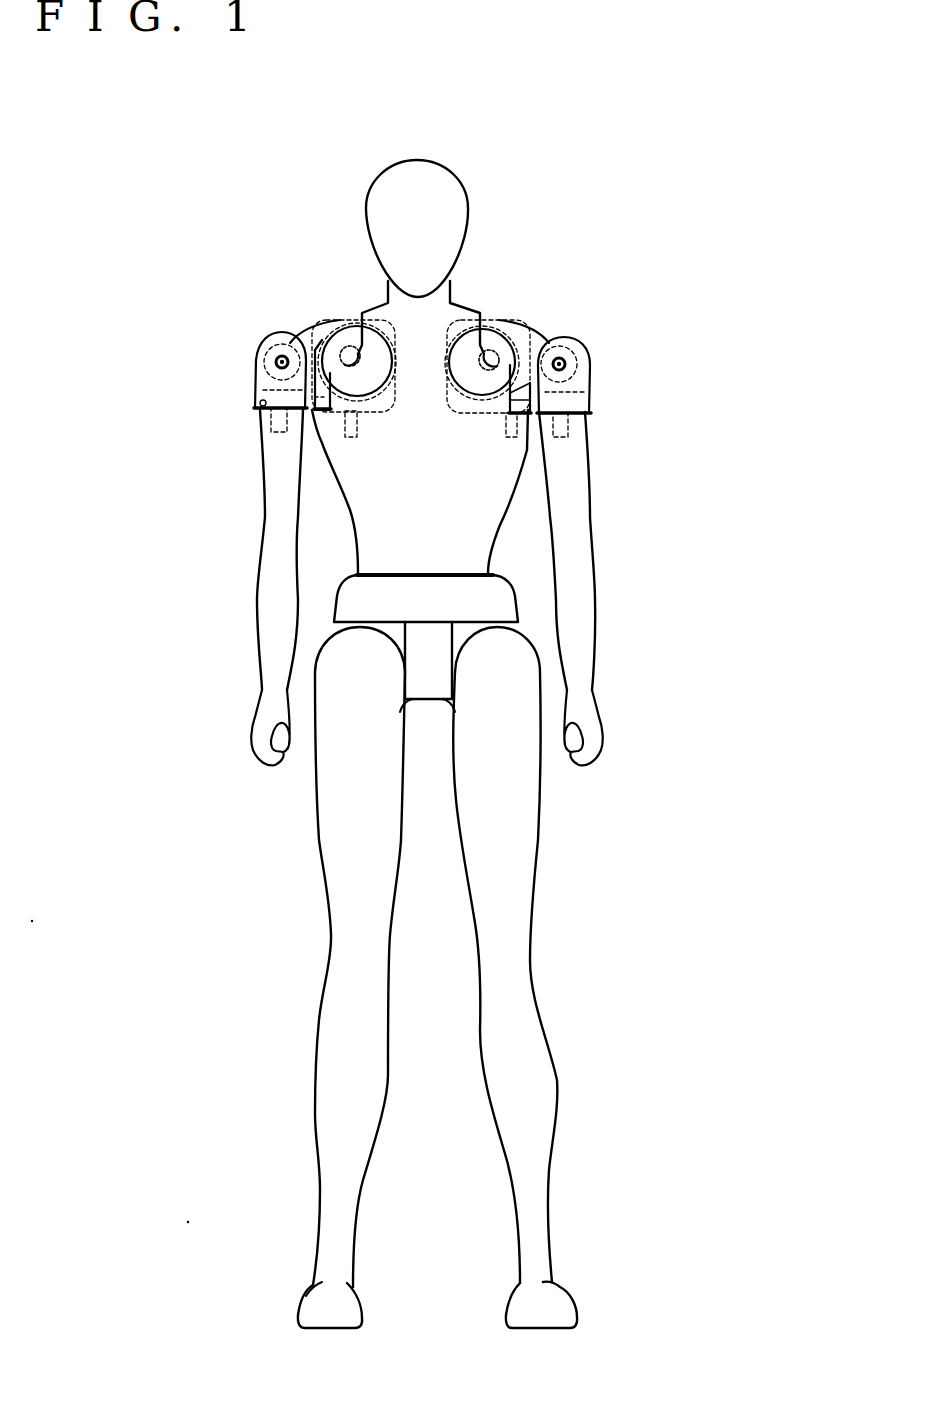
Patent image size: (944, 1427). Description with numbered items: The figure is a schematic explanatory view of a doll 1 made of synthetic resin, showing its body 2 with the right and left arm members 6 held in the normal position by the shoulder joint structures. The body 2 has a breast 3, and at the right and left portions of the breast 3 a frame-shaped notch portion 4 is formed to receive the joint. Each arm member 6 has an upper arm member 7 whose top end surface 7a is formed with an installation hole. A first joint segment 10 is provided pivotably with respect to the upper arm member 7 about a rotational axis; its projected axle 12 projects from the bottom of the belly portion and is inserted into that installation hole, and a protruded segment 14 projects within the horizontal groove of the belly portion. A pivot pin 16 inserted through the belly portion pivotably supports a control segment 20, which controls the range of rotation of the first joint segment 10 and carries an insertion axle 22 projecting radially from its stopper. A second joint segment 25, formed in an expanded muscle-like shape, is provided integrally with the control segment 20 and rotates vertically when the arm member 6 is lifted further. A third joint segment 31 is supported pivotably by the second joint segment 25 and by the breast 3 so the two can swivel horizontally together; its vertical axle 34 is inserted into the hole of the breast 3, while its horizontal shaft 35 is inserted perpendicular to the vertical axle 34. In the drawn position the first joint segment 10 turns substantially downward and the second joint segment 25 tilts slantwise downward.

The doll 1 is at (550, 197).
The body 2 is at (482, 517).
The breast 3 is at (428, 432).
The notch portion 4 is at (392, 387).
The arm member 6 is at (431, 587).
The upper arm member 7 is at (262, 462).
The top end surface 7a is at (258, 401).
The first joint segment 10 is at (249, 349).
The projected axle 12 is at (270, 422).
The protruded segment 14 is at (258, 376).
The pivot pin 16 is at (284, 344).
The control segment 20 is at (282, 345).
The insertion axle 22 is at (525, 345).
The second joint segment 25 is at (323, 316).
The third joint segment 31 is at (351, 352).
The vertical axle 34 is at (355, 437).
The horizontal shaft 35 is at (374, 350).